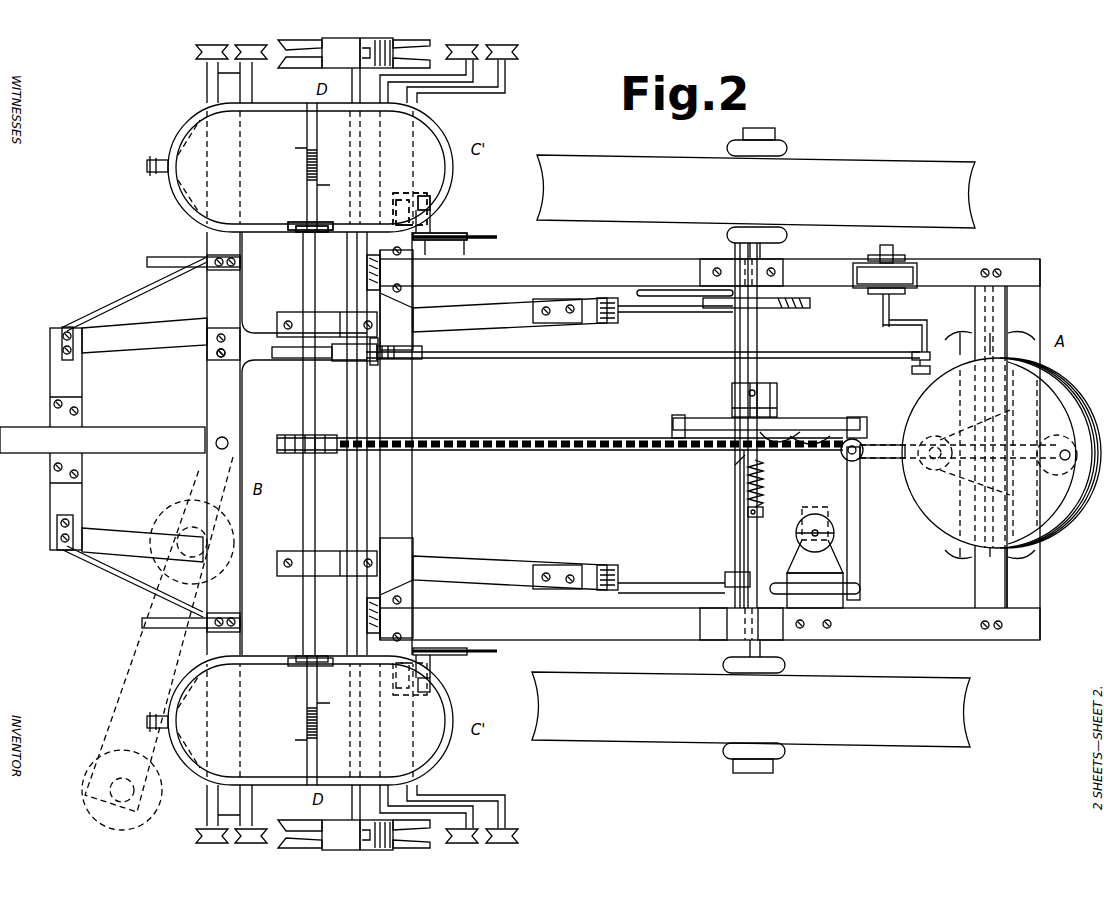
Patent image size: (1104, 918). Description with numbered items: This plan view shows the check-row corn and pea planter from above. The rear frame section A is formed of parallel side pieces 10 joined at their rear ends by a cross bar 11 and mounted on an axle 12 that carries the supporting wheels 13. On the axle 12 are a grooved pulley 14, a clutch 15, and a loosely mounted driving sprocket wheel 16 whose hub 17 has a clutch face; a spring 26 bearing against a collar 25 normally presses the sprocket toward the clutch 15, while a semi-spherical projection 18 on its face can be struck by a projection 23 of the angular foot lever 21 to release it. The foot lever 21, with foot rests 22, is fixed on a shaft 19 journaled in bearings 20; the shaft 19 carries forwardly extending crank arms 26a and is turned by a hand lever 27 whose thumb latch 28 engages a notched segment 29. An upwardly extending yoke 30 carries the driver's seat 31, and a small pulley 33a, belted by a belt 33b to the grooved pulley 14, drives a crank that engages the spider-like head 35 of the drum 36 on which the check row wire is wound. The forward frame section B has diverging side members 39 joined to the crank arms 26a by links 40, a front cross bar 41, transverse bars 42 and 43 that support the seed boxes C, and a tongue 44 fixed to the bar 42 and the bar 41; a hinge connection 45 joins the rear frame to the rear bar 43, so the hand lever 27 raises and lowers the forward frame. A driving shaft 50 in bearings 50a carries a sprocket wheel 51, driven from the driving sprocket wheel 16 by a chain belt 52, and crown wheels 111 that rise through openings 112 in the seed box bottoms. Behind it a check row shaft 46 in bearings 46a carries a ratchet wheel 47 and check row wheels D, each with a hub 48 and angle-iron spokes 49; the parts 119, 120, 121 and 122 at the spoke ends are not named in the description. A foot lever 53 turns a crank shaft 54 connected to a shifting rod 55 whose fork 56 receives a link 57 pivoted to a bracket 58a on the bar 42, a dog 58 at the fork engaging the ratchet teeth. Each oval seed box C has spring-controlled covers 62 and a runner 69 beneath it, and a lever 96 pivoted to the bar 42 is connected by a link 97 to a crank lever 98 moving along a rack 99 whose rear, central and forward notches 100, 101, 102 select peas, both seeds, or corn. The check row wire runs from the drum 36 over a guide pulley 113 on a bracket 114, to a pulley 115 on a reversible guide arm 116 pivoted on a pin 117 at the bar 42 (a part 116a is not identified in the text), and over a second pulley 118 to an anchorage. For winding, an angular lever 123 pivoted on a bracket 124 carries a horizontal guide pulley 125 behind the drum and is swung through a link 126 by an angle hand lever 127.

The side pieces 10 is at (710, 449).
The cross bar 11 is at (1040, 550).
The axle 12 is at (758, 343).
The supporting wheels 13 is at (753, 450).
The grooved pulley 14 is at (808, 308).
The clutch 15 is at (777, 394).
The driving sprocket wheel 16 is at (790, 455).
The hub 17 is at (777, 413).
The semi-spherical projection 18 is at (730, 458).
The shaft 19 is at (735, 543).
The bearings 20 is at (742, 270).
The angular foot lever 21 is at (735, 430).
The foot rests 22 is at (672, 424).
The projection 23 is at (818, 435).
The collar 25 is at (800, 535).
The spring 26 is at (763, 495).
The crank arm 26a is at (700, 313).
The lever 27 is at (778, 276).
The thumb latch 28 is at (690, 290).
The notched segment 29 is at (708, 268).
The yoke 30 is at (1023, 449).
The driver's seat 31 is at (940, 520).
The small pulley 33a is at (975, 295).
The belt 33b is at (880, 300).
The spider-like head 35 is at (958, 334).
The drum 36 is at (955, 549).
The side members 39 is at (510, 444).
The links 40 is at (607, 323).
The cross bar 41 is at (50, 381).
The forward transverse bar 42 is at (240, 585).
The rear transverse bar 43 is at (412, 493).
The tongue 44 is at (102, 440).
The hinge connection 45 is at (390, 444).
The check row shaft 46 is at (347, 490).
The bearings 46a is at (352, 316).
The ratchet wheel 47 is at (374, 365).
The hub 48 is at (354, 444).
The spokes 49 is at (420, 60).
The driving shaft 50 is at (303, 410).
The bearings 50a is at (300, 314).
The sprocket wheel 51 is at (320, 434).
The chain belt 52 is at (540, 438).
The foot lever 53 is at (885, 269).
The crank shaft 54 is at (905, 322).
The shifting rod 55 is at (674, 360).
The fork 56 is at (326, 361).
The link 57 is at (292, 358).
The dog 58 is at (386, 359).
The bracket 58a is at (215, 356).
The cover 62 is at (310, 444).
The runner 69 is at (147, 166).
The lever 96 is at (415, 193).
The link 97 is at (432, 200).
The crank lever 98 is at (480, 238).
The rack 99 is at (460, 234).
The rear notch 100 is at (464, 242).
The central notch 101 is at (425, 242).
The forward notch 102 is at (395, 412).
The crown wheels 111 is at (300, 232).
The openings 112 is at (295, 222).
The guide pulley 113 is at (835, 528).
The bracket 114 is at (815, 600).
The guide pulley 115 is at (168, 520).
The reversible guide arm 116 is at (132, 680).
The bar 116a is at (147, 262).
The pin 117 is at (224, 437).
The second pulley 118 is at (84, 778).
The pulley 119 is at (200, 50).
The pulley 120 is at (235, 848).
The pulley 121 is at (470, 56).
The pulley 122 is at (510, 55).
The angular lever 123 is at (1040, 440).
The bracket 124 is at (937, 436).
The horizontal guide pulley 125 is at (1082, 478).
The link 126 is at (860, 488).
The angle hand lever 127 is at (862, 589).